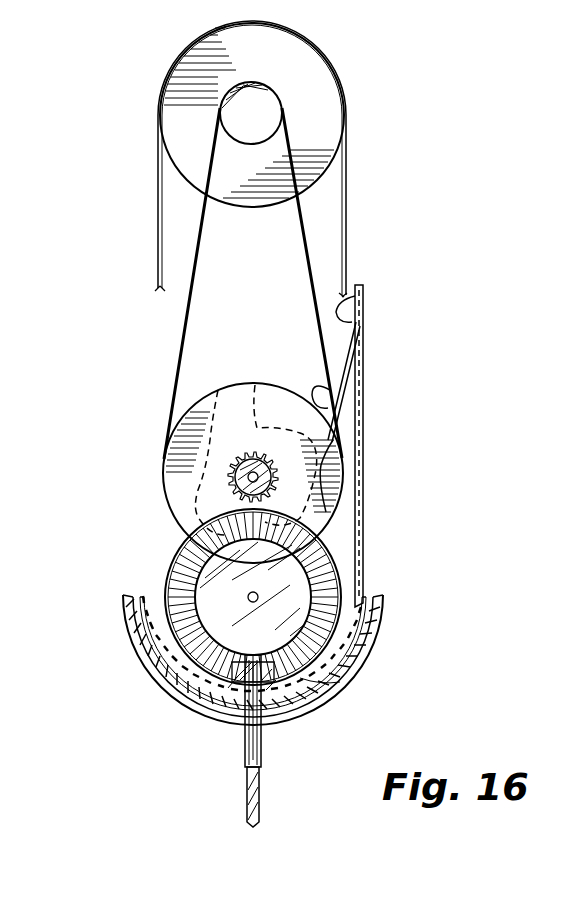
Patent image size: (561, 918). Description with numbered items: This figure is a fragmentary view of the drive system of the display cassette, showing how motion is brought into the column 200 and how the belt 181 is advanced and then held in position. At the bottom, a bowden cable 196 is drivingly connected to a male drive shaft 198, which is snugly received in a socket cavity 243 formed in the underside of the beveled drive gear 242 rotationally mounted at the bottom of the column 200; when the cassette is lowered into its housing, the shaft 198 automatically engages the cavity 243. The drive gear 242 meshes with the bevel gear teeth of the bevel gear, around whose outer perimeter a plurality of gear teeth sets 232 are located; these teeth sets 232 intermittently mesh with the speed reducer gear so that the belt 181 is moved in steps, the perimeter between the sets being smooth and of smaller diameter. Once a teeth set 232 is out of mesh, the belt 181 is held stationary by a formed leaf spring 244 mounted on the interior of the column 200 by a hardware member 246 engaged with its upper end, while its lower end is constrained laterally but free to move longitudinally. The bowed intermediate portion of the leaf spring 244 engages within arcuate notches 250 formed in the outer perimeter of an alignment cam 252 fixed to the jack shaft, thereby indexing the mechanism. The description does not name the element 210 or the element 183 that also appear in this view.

The belt 181 is at (157, 212).
The drive chain 210 is at (140, 360).
The arcuate notches 250 is at (258, 400).
The alignment cam 252 is at (214, 400).
The hardware member 246 is at (358, 300).
The leaf spring 244 is at (345, 372).
The gear teeth sets 232 is at (170, 545).
The column 200 is at (365, 566).
The beveled drive gear 242 is at (162, 680).
The guard plate 183 is at (340, 683).
The socket cavity 243 is at (282, 692).
The male drive shaft 198 is at (234, 720).
The bowden cable 196 is at (260, 797).